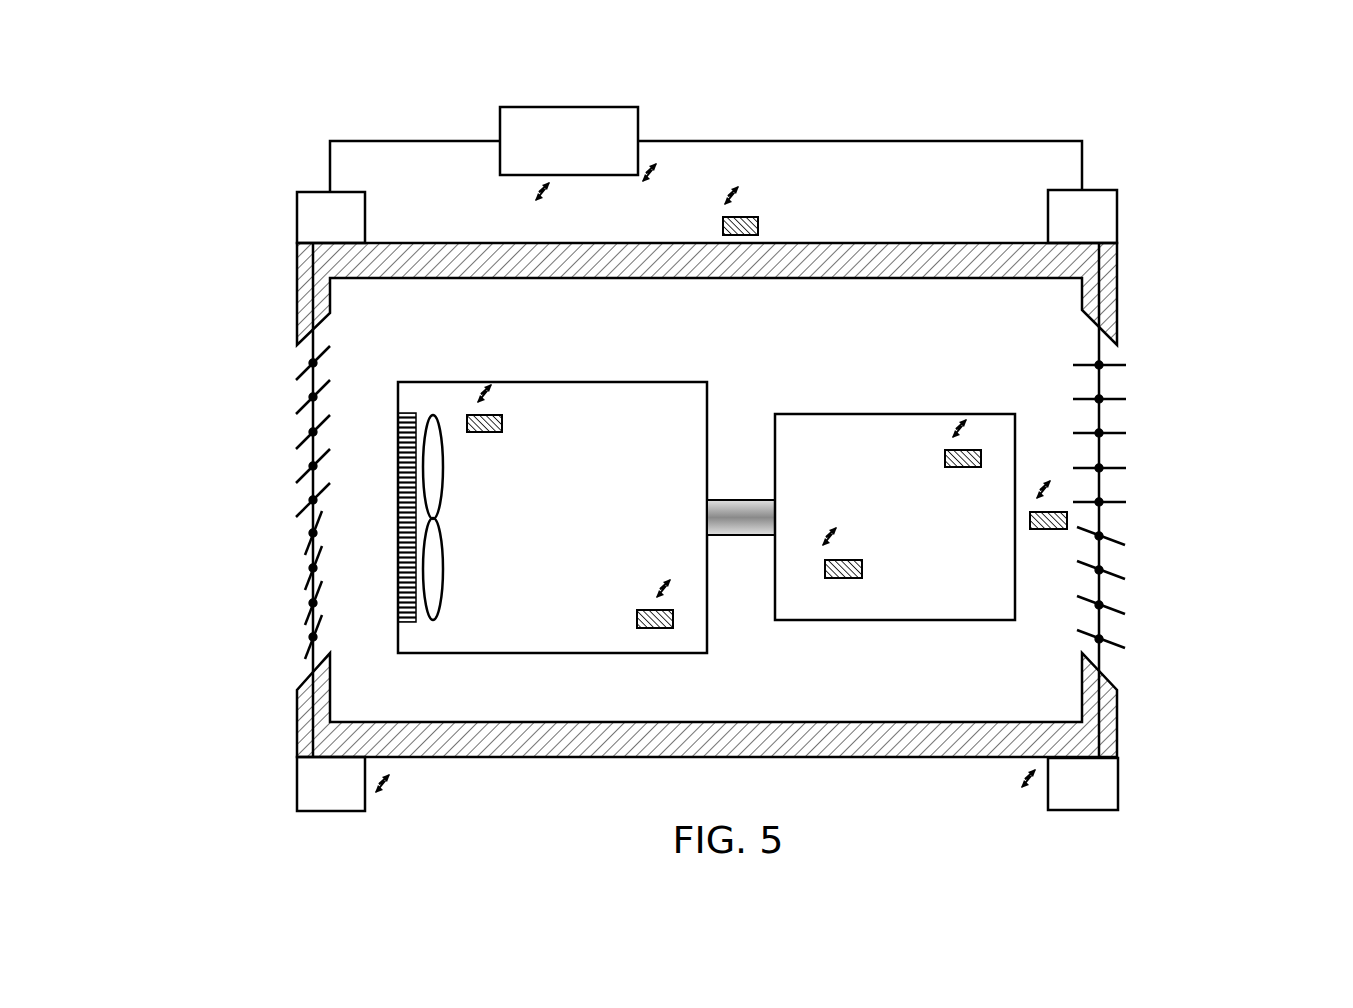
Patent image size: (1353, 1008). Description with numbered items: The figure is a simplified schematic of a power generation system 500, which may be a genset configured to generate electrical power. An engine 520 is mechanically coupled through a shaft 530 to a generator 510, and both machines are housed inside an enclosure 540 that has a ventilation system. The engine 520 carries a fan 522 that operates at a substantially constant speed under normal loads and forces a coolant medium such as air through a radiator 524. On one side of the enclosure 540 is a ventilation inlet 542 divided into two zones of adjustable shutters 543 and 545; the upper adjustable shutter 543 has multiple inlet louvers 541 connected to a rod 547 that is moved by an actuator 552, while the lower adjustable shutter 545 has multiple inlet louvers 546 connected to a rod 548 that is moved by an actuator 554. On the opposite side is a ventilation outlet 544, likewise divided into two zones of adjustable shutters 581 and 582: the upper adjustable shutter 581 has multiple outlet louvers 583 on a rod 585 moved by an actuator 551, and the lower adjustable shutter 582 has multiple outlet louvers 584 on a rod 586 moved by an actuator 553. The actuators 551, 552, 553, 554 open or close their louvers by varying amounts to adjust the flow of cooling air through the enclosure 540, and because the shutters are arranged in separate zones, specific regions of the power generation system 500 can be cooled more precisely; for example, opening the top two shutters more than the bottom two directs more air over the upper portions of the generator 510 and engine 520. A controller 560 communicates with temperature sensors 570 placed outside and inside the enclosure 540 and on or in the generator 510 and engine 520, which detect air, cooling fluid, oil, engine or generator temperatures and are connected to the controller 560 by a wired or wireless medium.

The power generation system 500 is at (1060, 94).
The generator 510 is at (881, 531).
The engine 520 is at (549, 518).
The fan 522 is at (433, 415).
The radiator 524 is at (420, 630).
The shaft 530 is at (741, 537).
The enclosure 540 is at (521, 758).
The inlet louvers 541 is at (1118, 467).
The ventilation inlet 542 is at (1171, 500).
The adjustable shutter 543 is at (1132, 409).
The ventilation outlet 544 is at (203, 500).
The adjustable shutter 545 is at (1166, 605).
The inlet louvers 546 is at (1118, 641).
The rod 547 is at (1099, 350).
The rod 548 is at (1103, 567).
The actuator 551 is at (309, 230).
The actuator 552 is at (1060, 230).
The actuator 553 is at (309, 797).
The actuator 554 is at (1061, 797).
The controller 560 is at (547, 155).
The temperature sensors 570 is at (758, 220).
The adjustable shutter 581 is at (247, 422).
The adjustable shutter 582 is at (243, 615).
The outlet louvers 583 is at (307, 470).
The outlet louvers 584 is at (307, 547).
The rod 585 is at (310, 362).
The rod 586 is at (310, 657).